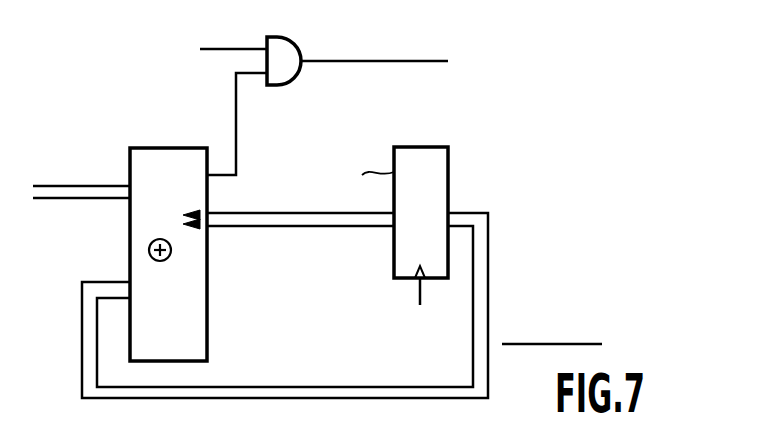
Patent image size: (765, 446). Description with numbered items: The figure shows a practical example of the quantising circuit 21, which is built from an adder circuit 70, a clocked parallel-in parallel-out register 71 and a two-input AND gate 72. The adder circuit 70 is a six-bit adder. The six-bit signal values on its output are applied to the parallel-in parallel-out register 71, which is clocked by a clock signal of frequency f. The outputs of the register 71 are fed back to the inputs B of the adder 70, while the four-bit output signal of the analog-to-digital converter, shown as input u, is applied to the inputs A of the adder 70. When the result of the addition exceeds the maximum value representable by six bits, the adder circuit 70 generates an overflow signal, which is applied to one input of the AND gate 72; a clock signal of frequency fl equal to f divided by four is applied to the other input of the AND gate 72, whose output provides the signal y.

The quantising circuit 21 is at (546, 134).
The adder circuit 70 is at (207, 318).
The clocked parallel-in parallel-out register 71 is at (435, 186).
The two-input AND gate 72 is at (281, 74).